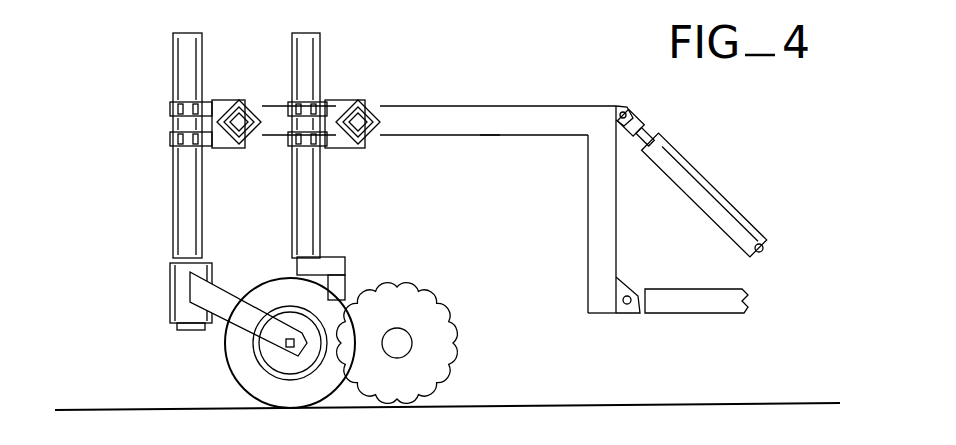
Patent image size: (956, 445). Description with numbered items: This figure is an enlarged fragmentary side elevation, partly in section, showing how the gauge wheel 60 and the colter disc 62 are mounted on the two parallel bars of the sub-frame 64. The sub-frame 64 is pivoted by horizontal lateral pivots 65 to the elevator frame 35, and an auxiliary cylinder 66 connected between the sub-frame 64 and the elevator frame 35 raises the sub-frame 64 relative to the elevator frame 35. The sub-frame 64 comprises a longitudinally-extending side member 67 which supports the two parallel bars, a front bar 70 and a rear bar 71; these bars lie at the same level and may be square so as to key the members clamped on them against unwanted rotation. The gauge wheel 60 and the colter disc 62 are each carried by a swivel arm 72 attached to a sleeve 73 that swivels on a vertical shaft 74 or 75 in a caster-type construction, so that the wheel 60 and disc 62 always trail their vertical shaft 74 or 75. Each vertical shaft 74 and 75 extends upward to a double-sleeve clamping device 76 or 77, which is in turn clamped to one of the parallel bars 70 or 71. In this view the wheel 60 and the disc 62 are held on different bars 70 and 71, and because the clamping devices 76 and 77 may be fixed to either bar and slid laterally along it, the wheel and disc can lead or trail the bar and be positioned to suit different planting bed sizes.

The elevator frame 35 is at (693, 305).
The gauge wheel 60 is at (245, 372).
The colter disc 62 is at (437, 375).
The sub-frame 64 is at (503, 104).
The horizontal lateral pivots 65 is at (622, 309).
The auxiliary cylinder 66 is at (690, 176).
The longitudinally-extending side member 67 is at (485, 123).
The front bar 70 is at (243, 106).
The rear bar 71 is at (367, 104).
The swivel arm 72 is at (230, 308).
The sleeve 73 is at (178, 302).
The vertical shaft 74 is at (185, 200).
The vertical shaft 75 is at (308, 189).
The double-sleeve clamping device 76 is at (220, 142).
The double-sleeve clamping device 77 is at (338, 108).